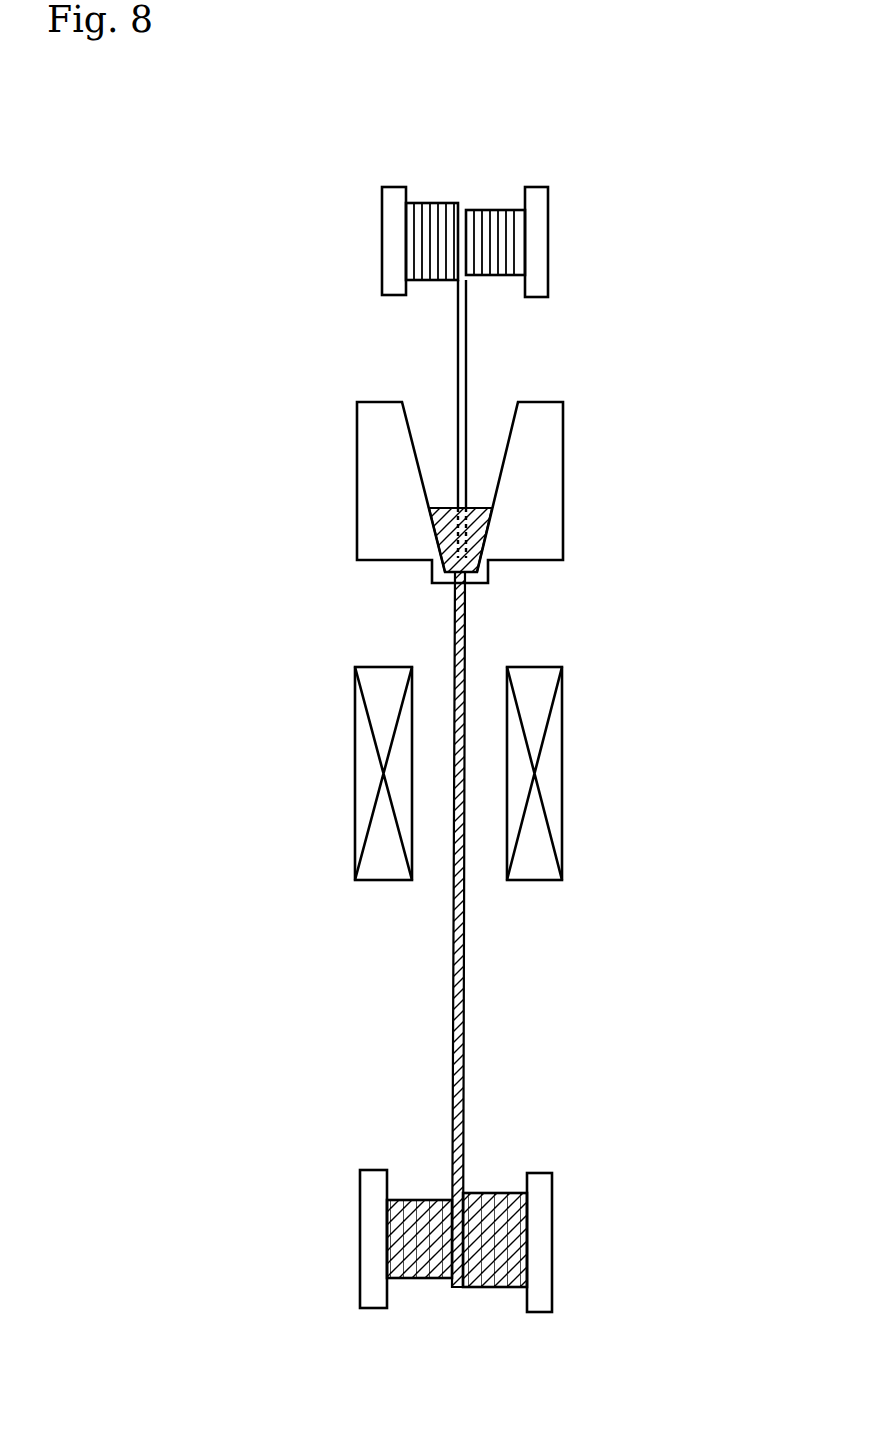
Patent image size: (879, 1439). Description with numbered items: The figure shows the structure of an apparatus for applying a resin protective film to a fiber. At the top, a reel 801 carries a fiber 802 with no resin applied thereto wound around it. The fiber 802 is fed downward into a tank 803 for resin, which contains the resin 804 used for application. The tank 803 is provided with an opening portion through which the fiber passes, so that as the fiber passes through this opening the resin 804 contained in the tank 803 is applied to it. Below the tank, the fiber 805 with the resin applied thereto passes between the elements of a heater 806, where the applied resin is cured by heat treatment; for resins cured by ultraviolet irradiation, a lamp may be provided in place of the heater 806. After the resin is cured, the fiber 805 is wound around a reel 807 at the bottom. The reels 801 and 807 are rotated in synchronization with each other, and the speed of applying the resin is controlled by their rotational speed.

The reel 801 is at (538, 242).
The fiber 802 is at (466, 382).
The tank 803 is at (537, 503).
The resin 804 is at (440, 537).
The fiber with the resin applied thereto 805 is at (467, 637).
The heater 806 is at (548, 778).
The reel 807 is at (547, 1238).